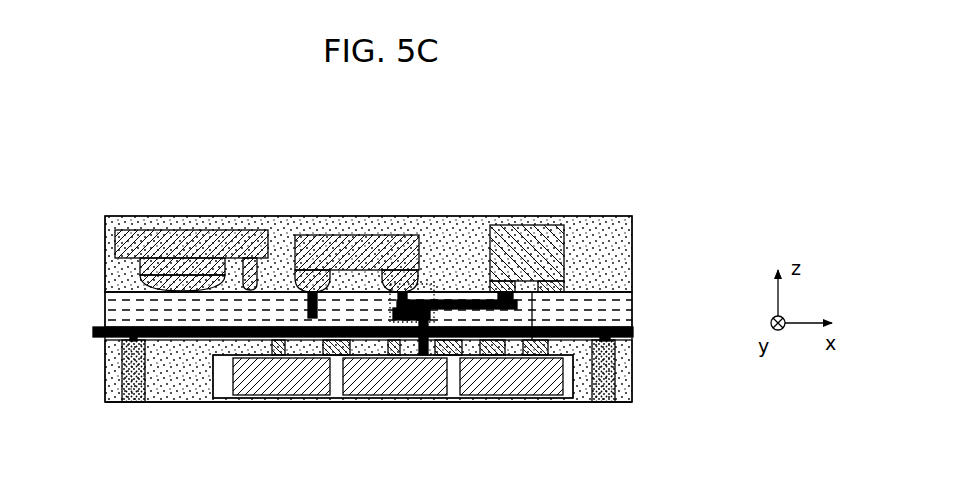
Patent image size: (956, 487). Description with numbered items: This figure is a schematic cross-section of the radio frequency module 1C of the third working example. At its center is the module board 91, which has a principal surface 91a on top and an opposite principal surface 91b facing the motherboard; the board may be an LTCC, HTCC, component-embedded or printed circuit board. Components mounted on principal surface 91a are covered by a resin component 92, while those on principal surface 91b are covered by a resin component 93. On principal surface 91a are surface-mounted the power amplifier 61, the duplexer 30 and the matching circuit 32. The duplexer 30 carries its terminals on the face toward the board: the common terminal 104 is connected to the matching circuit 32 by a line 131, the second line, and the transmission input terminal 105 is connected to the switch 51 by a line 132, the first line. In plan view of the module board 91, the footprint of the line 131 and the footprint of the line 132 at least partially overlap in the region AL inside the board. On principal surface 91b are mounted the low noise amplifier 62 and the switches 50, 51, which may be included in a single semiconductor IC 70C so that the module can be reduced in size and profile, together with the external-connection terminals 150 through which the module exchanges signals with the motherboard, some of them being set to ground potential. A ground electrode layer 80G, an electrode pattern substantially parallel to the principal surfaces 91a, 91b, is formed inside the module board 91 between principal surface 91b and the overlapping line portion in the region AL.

The radio frequency module 1C is at (692, 207).
The resin component 92 is at (622, 247).
The principal surface 91a is at (612, 290).
The module board 91 is at (630, 306).
The principal surface 91b is at (633, 355).
The resin component 93 is at (633, 401).
The ground electrode layer 80G is at (93, 331).
The external-connection terminal 150 is at (132, 402).
The switch 50 is at (292, 398).
The switch 51 is at (397, 396).
The low noise amplifier 62 is at (519, 386).
The semiconductor IC 70C is at (452, 386).
The power amplifier 61 is at (178, 245).
The duplexer 30 is at (344, 240).
The transmission input terminal 105 is at (297, 280).
The common terminal 104 is at (402, 282).
The line 132 is at (308, 296).
The line 131 is at (462, 303).
The region AL is at (432, 288).
The matching circuit 32 is at (546, 235).